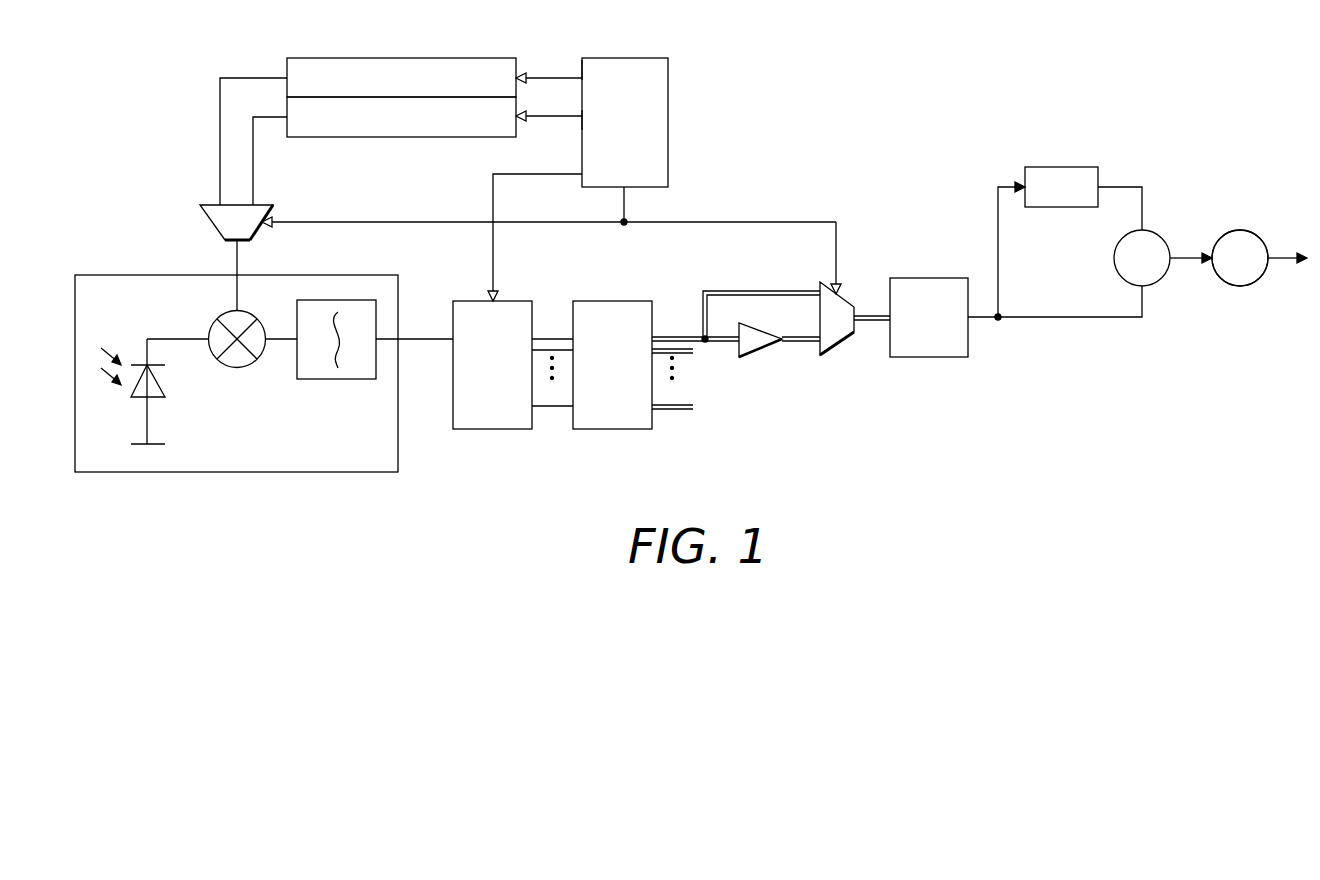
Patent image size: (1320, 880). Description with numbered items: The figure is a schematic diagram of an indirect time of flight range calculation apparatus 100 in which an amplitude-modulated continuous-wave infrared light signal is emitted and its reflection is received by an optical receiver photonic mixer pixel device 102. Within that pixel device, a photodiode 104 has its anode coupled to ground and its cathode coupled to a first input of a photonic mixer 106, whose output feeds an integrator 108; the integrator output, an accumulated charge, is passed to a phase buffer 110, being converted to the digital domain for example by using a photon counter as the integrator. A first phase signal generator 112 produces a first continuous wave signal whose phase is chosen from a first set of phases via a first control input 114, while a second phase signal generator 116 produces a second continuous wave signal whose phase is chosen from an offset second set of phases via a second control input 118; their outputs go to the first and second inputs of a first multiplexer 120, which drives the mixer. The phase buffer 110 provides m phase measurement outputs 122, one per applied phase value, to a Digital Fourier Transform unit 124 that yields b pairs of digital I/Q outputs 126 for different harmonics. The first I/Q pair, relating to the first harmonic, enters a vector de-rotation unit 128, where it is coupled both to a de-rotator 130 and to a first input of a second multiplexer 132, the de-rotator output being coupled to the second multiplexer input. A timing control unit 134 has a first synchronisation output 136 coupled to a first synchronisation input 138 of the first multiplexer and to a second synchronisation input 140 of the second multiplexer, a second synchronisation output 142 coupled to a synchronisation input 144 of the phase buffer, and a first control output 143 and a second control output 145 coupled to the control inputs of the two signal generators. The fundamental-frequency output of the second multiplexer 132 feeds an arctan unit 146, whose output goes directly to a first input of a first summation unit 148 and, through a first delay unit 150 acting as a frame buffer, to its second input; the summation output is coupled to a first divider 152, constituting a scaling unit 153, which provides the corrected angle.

The indirect time of flight range calculation apparatus 100 is at (139, 76).
The optical receiver photonic mixer pixel device 102 is at (372, 473).
The photodiode 104 is at (135, 398).
The photonic mixer 106 is at (237, 368).
The integrator 108 is at (350, 380).
The phase buffer 110 is at (492, 365).
The first phase signal generator 112 is at (401, 77).
The first control input 114 is at (519, 72).
The second phase signal generator 116 is at (401, 117).
The second control input 118 is at (518, 124).
The first multiplexer 120 is at (205, 226).
The phase measurement outputs 122 is at (554, 436).
The Digital Fourier Transform unit 124 is at (612, 365).
The digital I/Q outputs 126 is at (672, 436).
The vector de-rotation unit 128 is at (796, 365).
The de-rotator 130 is at (757, 358).
The second multiplexer 132 is at (837, 356).
The timing control unit 134 is at (625, 122).
The first synchronisation output 136 is at (630, 190).
The first synchronisation input 138 is at (270, 228).
The second synchronisation input 140 is at (843, 290).
The second synchronisation output 142 is at (580, 178).
The first control output 143 is at (580, 72).
The synchronisation input 144 is at (498, 296).
The second control output 145 is at (580, 120).
The arctan unit 146 is at (929, 317).
The first summation unit 148 is at (1114, 258).
The first delay unit 150 is at (1061, 187).
The first divider 152 is at (1240, 286).
The scaling unit 153 is at (1240, 258).